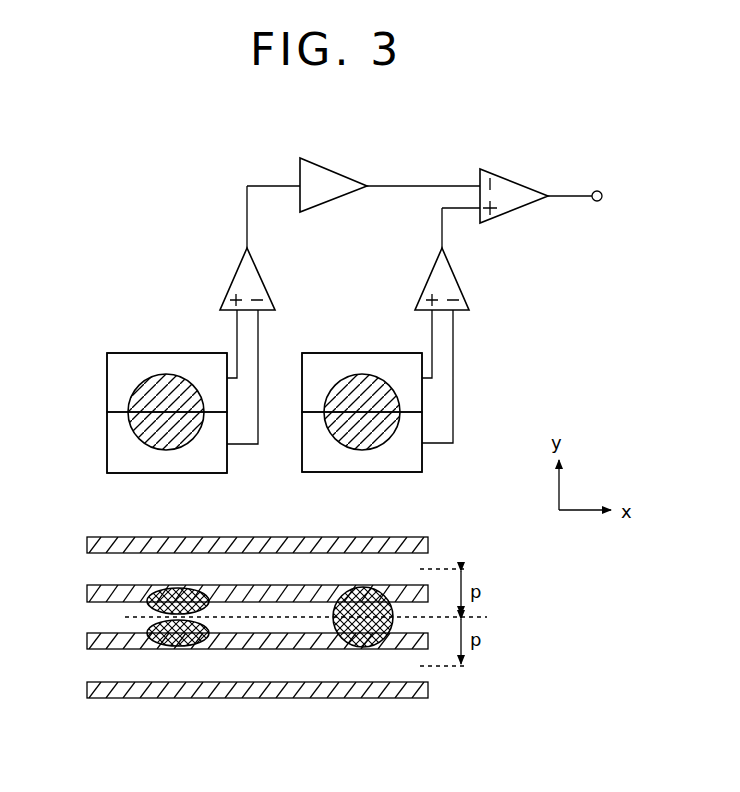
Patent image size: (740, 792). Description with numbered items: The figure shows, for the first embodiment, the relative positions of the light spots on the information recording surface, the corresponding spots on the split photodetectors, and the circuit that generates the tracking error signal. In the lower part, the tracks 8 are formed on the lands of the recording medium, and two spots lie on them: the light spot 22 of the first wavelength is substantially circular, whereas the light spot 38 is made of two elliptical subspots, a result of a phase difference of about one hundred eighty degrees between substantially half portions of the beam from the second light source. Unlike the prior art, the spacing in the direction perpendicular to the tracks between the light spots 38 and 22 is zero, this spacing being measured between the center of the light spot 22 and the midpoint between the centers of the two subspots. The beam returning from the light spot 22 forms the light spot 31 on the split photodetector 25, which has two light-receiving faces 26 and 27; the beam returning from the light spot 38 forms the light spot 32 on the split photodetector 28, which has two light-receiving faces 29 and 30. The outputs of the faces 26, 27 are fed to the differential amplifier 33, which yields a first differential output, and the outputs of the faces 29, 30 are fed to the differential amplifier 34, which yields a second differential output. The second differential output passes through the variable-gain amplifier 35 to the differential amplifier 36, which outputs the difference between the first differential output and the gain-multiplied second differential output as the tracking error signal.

The tracks 8 is at (90, 572).
The light spot 22 is at (334, 627).
The split photodetector 25 is at (372, 396).
The light-receiving face 26 is at (390, 357).
The light-receiving face 27 is at (412, 468).
The split photodetector 28 is at (139, 381).
The light-receiving face 29 is at (110, 380).
The light-receiving face 30 is at (110, 452).
The light spot 31 is at (362, 373).
The light spot 32 is at (177, 375).
The differential amplifier 33 is at (458, 282).
The differential amplifier 34 is at (233, 280).
The variable-gain amplifier 35 is at (337, 171).
The differential amplifier 36 is at (521, 185).
The light spot 38 is at (212, 605).